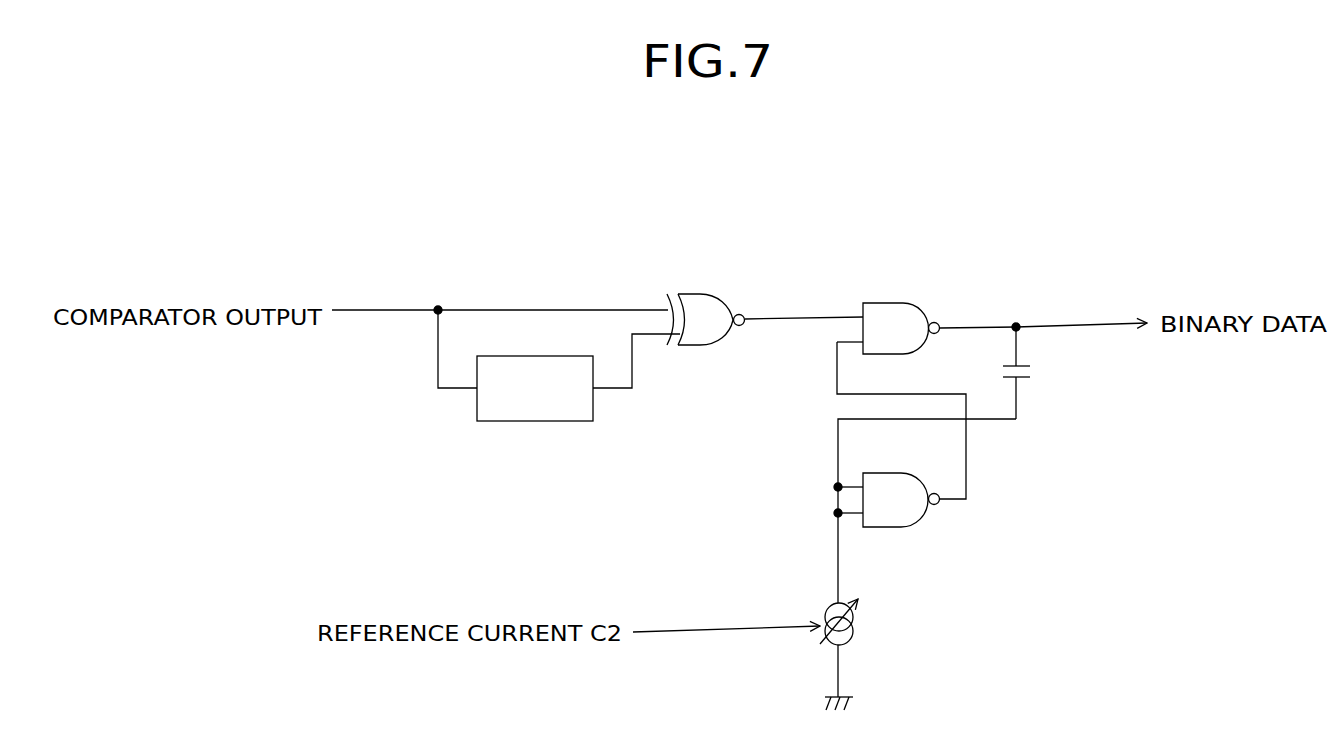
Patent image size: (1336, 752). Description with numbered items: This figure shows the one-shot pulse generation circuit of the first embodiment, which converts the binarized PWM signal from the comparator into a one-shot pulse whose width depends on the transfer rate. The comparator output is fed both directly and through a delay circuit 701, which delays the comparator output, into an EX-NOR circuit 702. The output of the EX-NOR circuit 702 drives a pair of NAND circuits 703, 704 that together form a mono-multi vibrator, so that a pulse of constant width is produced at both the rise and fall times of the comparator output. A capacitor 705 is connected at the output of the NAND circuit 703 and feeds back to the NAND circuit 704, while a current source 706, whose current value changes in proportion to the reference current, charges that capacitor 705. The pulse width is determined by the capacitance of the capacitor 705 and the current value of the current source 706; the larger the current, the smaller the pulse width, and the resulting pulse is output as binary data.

The delay circuit 701 is at (535, 408).
The EX-NOR circuit 702 is at (717, 300).
The NAND circuit 703 is at (901, 313).
The NAND circuit 704 is at (909, 522).
The capacitor 705 is at (1052, 373).
The current source 706 is at (874, 654).